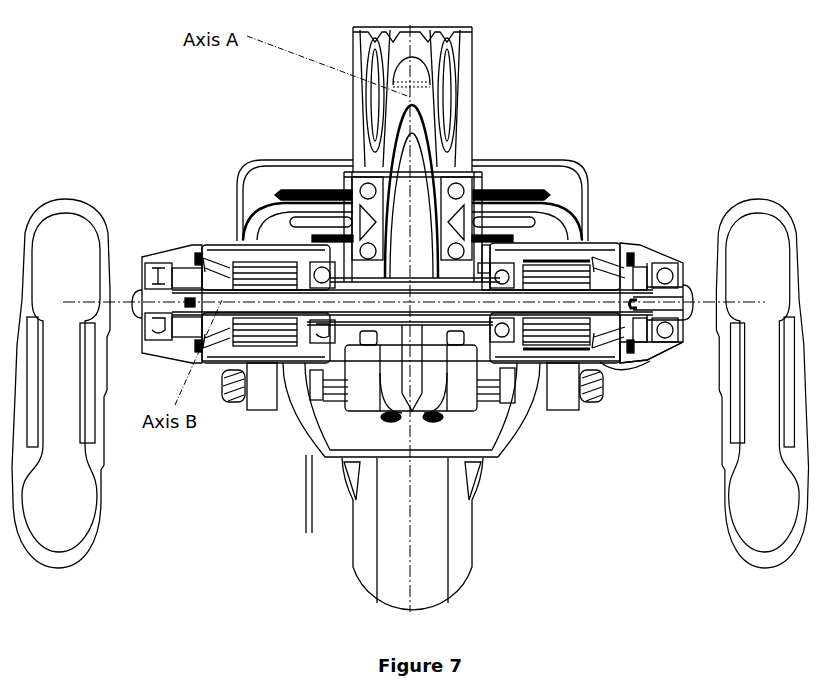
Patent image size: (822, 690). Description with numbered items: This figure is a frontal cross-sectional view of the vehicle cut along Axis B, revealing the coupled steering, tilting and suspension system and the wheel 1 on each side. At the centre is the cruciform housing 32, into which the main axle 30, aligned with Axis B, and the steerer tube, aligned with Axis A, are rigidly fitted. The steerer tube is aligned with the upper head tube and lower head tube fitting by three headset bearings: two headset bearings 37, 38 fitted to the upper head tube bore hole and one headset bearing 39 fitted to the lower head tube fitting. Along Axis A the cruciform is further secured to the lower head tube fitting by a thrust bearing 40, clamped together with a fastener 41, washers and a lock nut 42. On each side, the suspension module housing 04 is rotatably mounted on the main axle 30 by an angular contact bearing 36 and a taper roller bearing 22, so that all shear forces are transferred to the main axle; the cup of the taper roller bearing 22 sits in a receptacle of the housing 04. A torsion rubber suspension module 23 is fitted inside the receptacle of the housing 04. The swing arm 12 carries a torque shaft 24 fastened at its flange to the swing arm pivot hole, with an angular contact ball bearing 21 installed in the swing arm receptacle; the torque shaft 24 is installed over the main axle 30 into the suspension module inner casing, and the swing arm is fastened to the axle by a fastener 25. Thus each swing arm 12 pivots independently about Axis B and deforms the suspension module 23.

The wheel 1 is at (736, 240).
The left suspension module housing 04 is at (553, 262).
The left swing arm 12 is at (663, 350).
The angular contact ball bearing 21 is at (665, 263).
The taper roller bearing 22 is at (610, 243).
The left torsion rubber suspension module 23 is at (583, 400).
The torque shaft 24 is at (632, 322).
The fastener 25 is at (685, 287).
The main axle 30 is at (508, 413).
The cruciform housing 32 is at (320, 253).
The angular contact bearing 36 is at (498, 285).
The headset bearing 37 is at (328, 157).
The headset bearing 38 is at (323, 222).
The headset bearing 39 is at (362, 385).
The thrust bearing 40 is at (383, 403).
The fastener 41 is at (372, 437).
The lock nut 42 is at (347, 500).